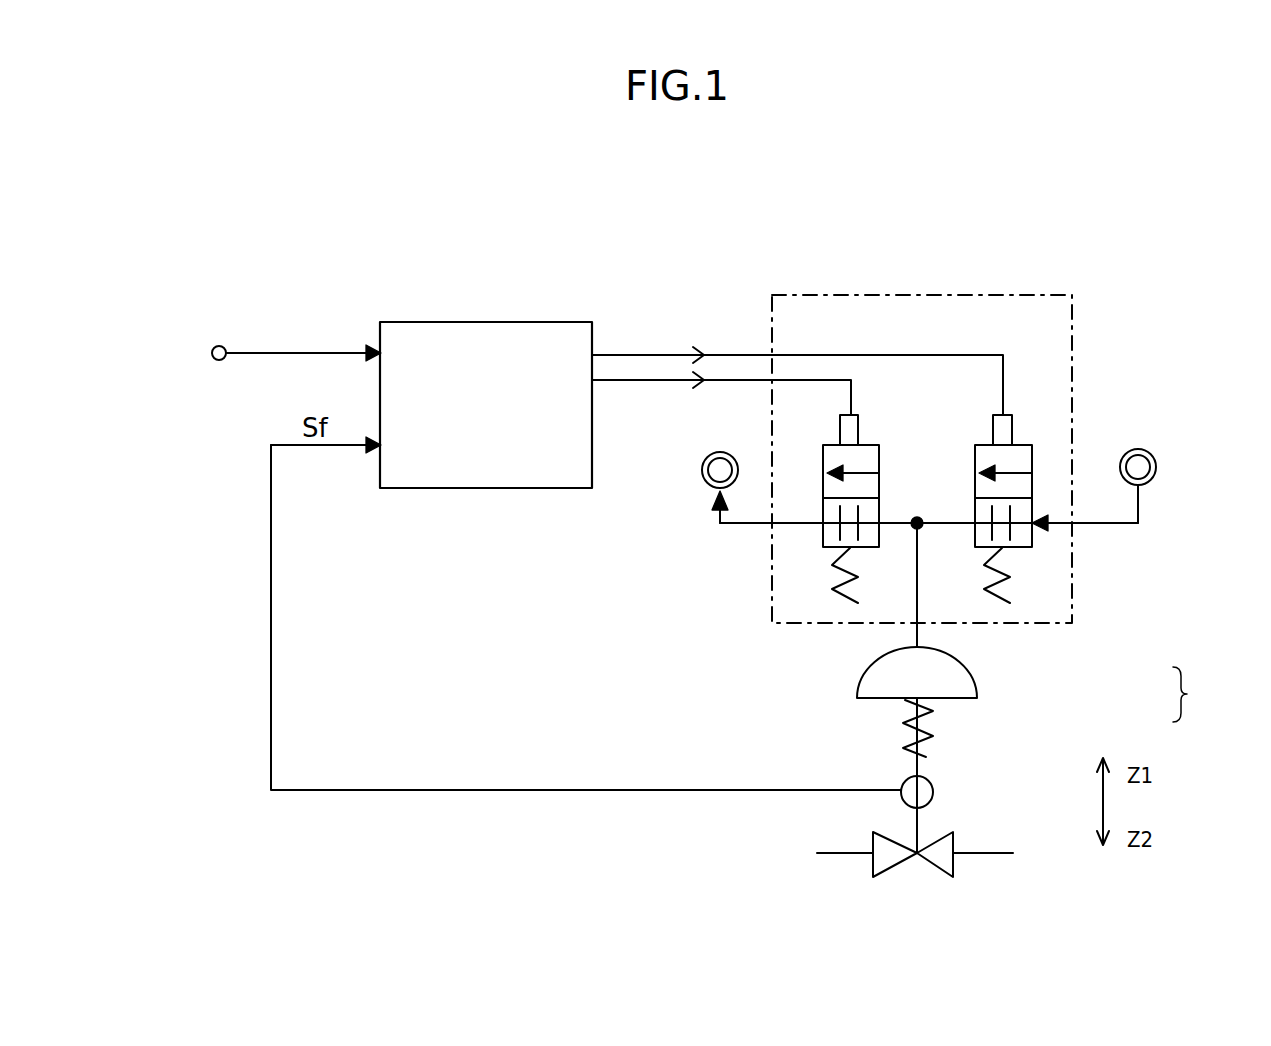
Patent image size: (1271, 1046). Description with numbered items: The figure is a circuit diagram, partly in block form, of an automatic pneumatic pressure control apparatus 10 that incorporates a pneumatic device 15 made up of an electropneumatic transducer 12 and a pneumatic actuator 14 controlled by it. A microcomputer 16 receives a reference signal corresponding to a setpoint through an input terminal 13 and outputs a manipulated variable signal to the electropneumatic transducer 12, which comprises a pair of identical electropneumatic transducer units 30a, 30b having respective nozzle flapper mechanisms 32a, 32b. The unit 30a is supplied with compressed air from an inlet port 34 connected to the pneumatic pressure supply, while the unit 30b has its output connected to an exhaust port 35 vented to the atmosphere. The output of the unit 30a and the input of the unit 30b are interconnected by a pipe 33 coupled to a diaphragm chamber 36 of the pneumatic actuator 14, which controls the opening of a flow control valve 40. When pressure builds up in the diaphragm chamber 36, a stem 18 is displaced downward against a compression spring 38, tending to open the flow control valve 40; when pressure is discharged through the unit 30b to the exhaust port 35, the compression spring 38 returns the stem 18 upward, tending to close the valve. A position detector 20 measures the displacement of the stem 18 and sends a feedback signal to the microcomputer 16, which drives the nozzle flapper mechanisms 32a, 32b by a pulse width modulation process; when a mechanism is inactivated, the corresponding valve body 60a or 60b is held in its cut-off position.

The automatic pneumatic pressure control apparatus 10 is at (716, 221).
The electropneumatic transducer 12 is at (1074, 584).
The input terminal 13 is at (215, 361).
The pneumatic actuator 14 is at (979, 750).
The pneumatic device 15 is at (1203, 694).
The microcomputer 16 is at (515, 322).
The stem 18 is at (920, 822).
The position detector 20 is at (897, 803).
The electropneumatic transducer unit 30a is at (1021, 496).
The electropneumatic transducer unit 30b is at (841, 514).
The nozzle flapper mechanism 32a is at (993, 428).
The nozzle flapper mechanism 32b is at (858, 428).
The pipe 33 is at (921, 583).
The inlet port 34 is at (1157, 464).
The exhaust port 35 is at (706, 483).
The diaphragm chamber 36 is at (872, 688).
The compression spring 38 is at (949, 728).
The flow control valve 40 is at (893, 864).
The valve body 60a is at (973, 487).
The valve body 60b is at (892, 460).